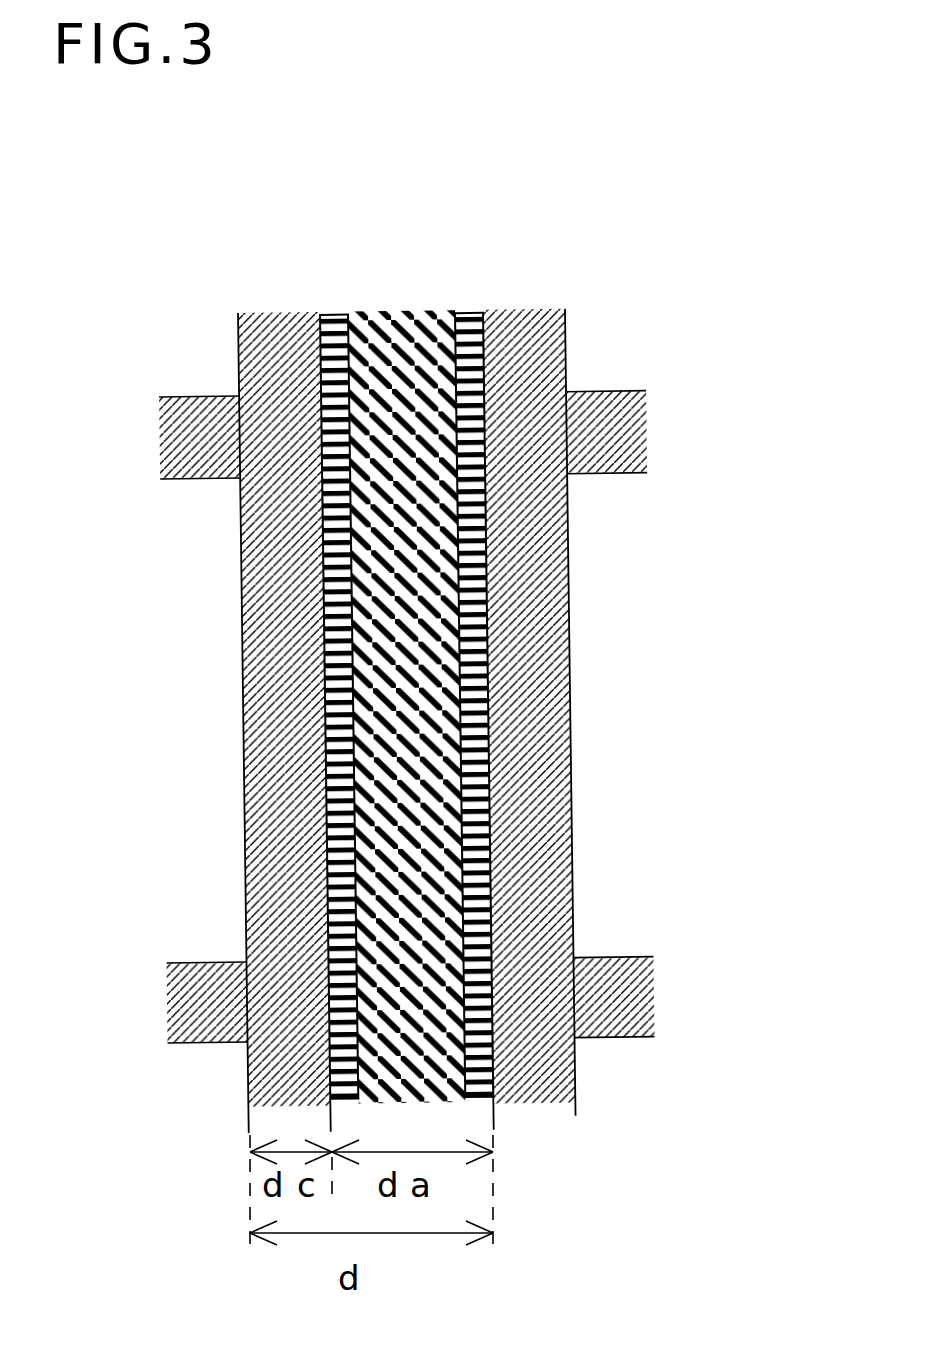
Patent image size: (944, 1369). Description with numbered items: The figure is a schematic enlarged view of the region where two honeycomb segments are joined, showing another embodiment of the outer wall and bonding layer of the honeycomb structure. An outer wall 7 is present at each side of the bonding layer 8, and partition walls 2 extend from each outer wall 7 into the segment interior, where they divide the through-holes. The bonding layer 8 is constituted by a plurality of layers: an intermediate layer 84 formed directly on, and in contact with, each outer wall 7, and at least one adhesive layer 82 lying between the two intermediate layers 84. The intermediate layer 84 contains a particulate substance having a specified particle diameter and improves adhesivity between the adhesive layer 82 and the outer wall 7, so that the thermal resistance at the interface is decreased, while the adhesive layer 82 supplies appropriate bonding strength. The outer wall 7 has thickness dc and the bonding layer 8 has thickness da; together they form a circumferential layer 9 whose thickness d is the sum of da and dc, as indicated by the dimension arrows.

The partition wall 2 is at (630, 418).
The outer wall 7 is at (245, 697).
The bonding layer 8 is at (323, 307).
The circumferential layer 9 is at (238, 238).
The adhesive layer 82 is at (437, 603).
The intermediate layer 84 is at (740, 660).